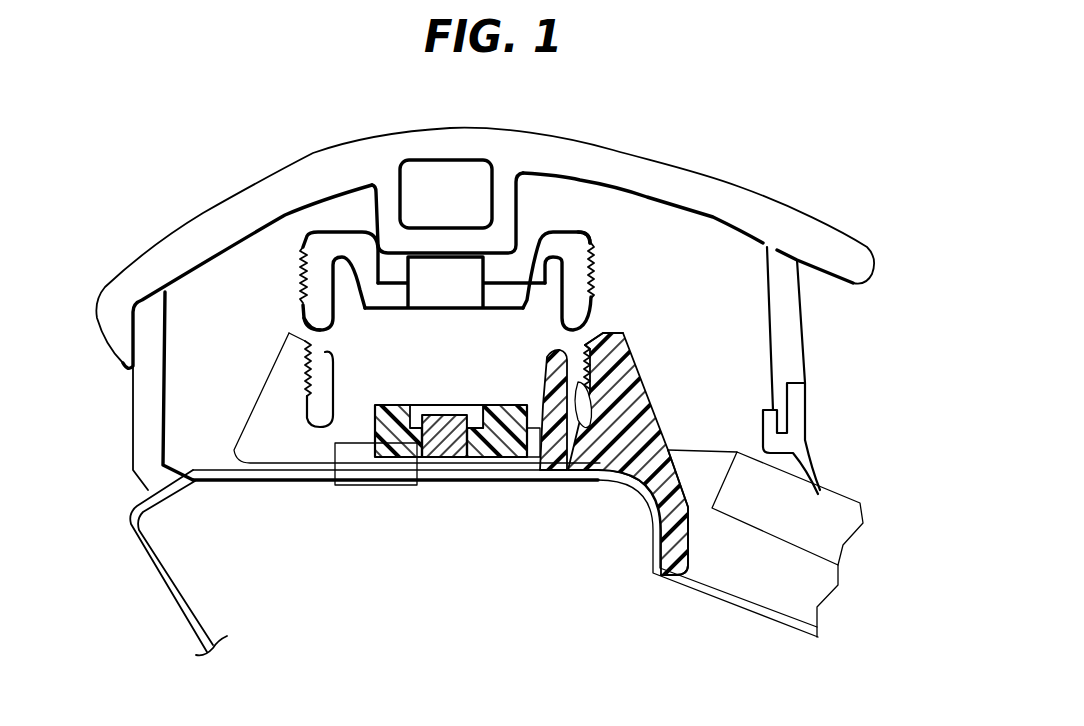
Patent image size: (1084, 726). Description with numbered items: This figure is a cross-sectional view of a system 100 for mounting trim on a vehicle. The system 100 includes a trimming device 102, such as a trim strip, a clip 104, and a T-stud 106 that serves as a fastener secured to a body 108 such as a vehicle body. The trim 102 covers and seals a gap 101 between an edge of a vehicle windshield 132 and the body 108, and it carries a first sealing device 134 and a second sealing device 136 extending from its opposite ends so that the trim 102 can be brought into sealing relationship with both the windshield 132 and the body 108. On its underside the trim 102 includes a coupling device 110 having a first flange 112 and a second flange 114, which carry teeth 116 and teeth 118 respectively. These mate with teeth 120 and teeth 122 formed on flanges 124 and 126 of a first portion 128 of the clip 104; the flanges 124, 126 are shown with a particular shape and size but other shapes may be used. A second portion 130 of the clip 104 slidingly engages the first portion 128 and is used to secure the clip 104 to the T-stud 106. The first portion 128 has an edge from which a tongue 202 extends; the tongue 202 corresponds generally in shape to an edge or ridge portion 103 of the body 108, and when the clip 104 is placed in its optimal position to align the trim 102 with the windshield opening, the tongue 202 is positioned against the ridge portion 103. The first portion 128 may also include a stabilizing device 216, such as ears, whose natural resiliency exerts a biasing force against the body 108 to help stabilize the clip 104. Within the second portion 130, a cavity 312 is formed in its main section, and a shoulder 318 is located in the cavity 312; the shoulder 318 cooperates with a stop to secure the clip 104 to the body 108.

The system 100 is at (840, 85).
The gap 101 is at (700, 448).
The trimming device 102 is at (557, 133).
The ridge portion 103 is at (643, 517).
The clip 104 is at (636, 328).
The T-stud 106 is at (443, 463).
The body 108 is at (563, 481).
The coupling device 110 is at (337, 210).
The first flange 112 is at (313, 310).
The second flange 114 is at (580, 305).
The teeth 116 is at (320, 310).
The teeth 118 is at (596, 250).
The teeth 120 is at (317, 417).
The teeth 122 is at (583, 375).
The flange 124 is at (277, 358).
The flange 126 is at (615, 370).
The first portion 128 is at (653, 403).
The second portion 130 is at (397, 440).
The vehicle windshield 132 is at (843, 512).
The first sealing device 134 is at (143, 413).
The second sealing device 136 is at (797, 442).
The tongue 202 is at (690, 537).
The stabilizing device 216 is at (348, 465).
The cavity 312 is at (458, 407).
The shoulder 318 is at (411, 426).